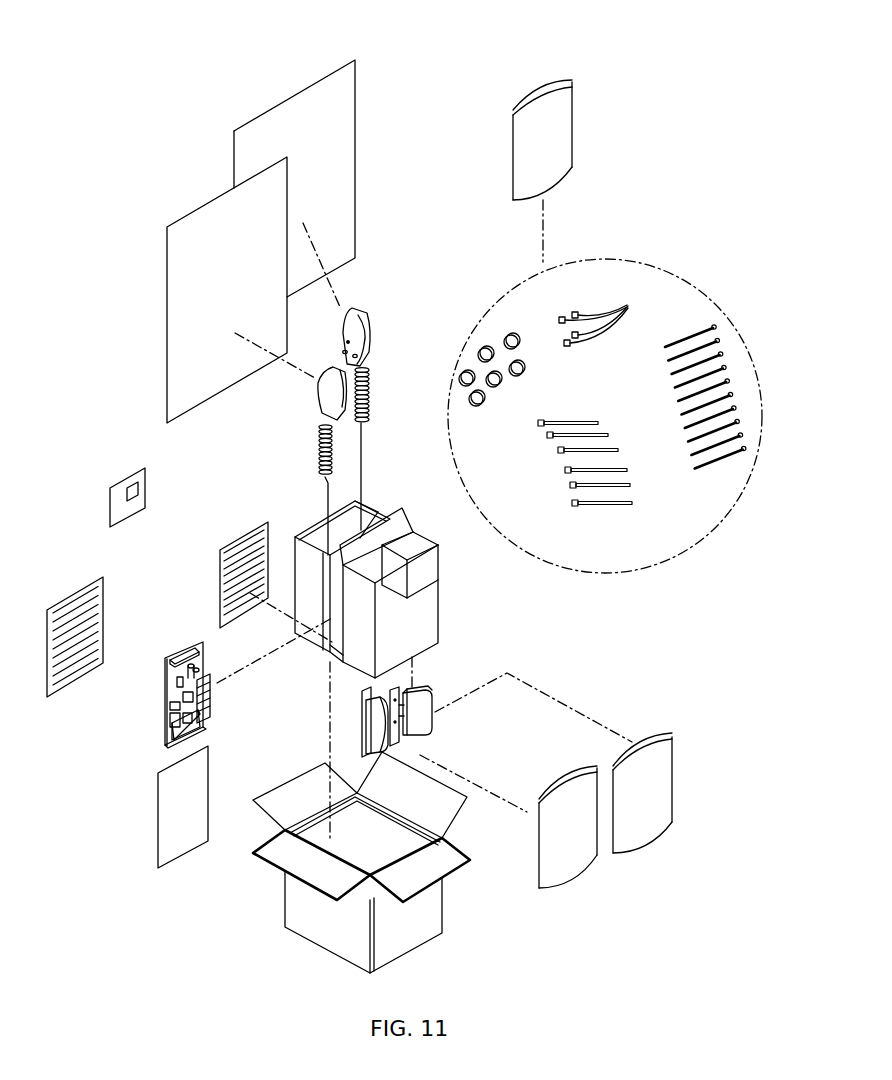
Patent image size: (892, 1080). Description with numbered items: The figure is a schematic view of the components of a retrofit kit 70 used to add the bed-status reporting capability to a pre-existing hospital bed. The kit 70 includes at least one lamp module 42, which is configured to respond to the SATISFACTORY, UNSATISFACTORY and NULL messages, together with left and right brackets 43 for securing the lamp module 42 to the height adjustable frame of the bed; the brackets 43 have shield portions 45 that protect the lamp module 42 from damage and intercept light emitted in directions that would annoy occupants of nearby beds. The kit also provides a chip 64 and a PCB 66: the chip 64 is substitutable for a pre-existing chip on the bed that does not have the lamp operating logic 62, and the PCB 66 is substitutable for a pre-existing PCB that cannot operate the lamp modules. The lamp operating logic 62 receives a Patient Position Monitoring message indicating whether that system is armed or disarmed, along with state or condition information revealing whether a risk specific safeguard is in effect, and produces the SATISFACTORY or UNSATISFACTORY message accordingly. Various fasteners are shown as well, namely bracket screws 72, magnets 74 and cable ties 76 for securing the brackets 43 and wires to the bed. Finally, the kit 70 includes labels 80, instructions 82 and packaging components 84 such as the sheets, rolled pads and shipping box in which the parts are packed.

The retrofit kit 70 is at (650, 48).
The packaging components 84 is at (343, 168).
The lamp module 42 is at (356, 340).
The brackets 43 is at (360, 740).
The shield portions 45 is at (367, 730).
The lamp operating logic 62 is at (137, 487).
The chip 64 is at (115, 490).
The PCB 66 is at (180, 650).
The bracket screws 72 is at (608, 321).
The magnets 74 is at (502, 383).
The cable ties 76 is at (610, 503).
The labels 80 is at (80, 597).
The instructions 82 is at (247, 542).